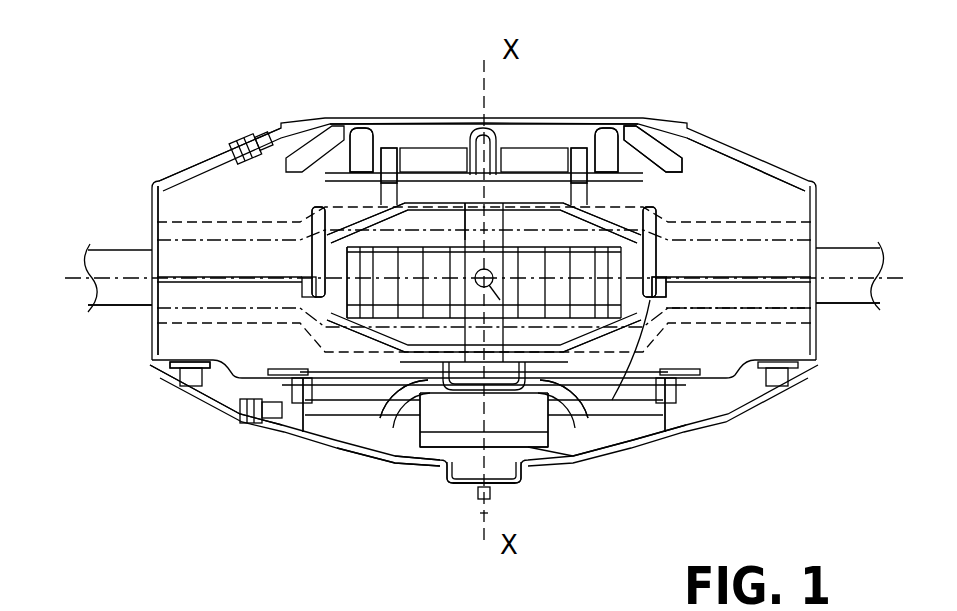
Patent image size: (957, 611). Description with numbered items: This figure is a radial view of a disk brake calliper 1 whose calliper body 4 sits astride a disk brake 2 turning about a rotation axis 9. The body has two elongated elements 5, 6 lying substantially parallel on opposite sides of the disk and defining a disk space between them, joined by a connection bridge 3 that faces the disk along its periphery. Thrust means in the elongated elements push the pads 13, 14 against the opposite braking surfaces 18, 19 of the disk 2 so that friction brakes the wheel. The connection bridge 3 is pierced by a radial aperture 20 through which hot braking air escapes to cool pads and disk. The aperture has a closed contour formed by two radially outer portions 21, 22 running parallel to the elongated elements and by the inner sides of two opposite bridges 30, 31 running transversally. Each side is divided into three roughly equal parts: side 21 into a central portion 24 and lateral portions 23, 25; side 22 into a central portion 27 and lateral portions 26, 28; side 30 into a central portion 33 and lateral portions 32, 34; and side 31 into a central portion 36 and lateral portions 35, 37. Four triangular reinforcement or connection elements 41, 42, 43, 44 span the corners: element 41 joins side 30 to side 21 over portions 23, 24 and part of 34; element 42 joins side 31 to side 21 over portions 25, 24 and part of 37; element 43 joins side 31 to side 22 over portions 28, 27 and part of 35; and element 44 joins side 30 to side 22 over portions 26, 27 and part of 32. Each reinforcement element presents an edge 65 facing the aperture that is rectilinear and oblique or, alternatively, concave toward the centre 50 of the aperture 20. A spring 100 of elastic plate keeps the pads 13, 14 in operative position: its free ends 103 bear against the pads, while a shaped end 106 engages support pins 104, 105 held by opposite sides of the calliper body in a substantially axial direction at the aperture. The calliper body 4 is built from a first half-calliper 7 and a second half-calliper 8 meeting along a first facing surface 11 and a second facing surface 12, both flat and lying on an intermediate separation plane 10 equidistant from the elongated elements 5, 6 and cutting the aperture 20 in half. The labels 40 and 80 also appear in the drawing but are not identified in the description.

The calliper for disk brake 1 is at (780, 117).
The disk brake 2 is at (837, 258).
The connection bridge 3 is at (185, 250).
The calliper body 4 is at (791, 165).
The elongated element 5 is at (516, 198).
The elongated element 6 is at (380, 420).
The first half-calliper 7 is at (215, 95).
The second half-calliper 8 is at (172, 432).
The rotation axis 9 is at (484, 513).
The intermediate separation plane 10 is at (91, 283).
The first facing surface 11 is at (187, 387).
The second facing surface 12 is at (227, 273).
The pad 13 is at (447, 235).
The pad 14 is at (437, 450).
The braking surface 18 is at (117, 307).
The braking surface 19 is at (117, 248).
The aperture 20 is at (650, 215).
The radially outer portion 21 is at (613, 199).
The radially outer portion 22 is at (565, 445).
The lateral portion 23 is at (383, 195).
The central portion 24 is at (512, 185).
The lateral portion 25 is at (586, 200).
The lateral portion 26 is at (326, 378).
The central portion 27 is at (455, 442).
The lateral portion 28 is at (653, 433).
The inner bridge side 30 is at (315, 205).
The inner bridge side 31 is at (660, 240).
The lateral portion 32 is at (330, 322).
The central portion 33 is at (313, 290).
The lateral portion 34 is at (313, 237).
The lateral portion 35 is at (660, 333).
The central portion 36 is at (643, 357).
The lateral portion 37 is at (650, 250).
The bottom element 40 is at (470, 547).
The connection element 41 is at (341, 215).
The connection element 42 is at (660, 216).
The connection element 43 is at (687, 417).
The connection element 44 is at (356, 400).
The centre of the aperture 50 is at (492, 312).
The edge 65 is at (395, 190).
The bleed screw 80 is at (232, 135).
The spring 100 is at (483, 228).
The free ends 103 is at (548, 445).
The support pin 104 is at (312, 420).
The support pin 105 is at (600, 385).
The shaped end 106 is at (672, 300).